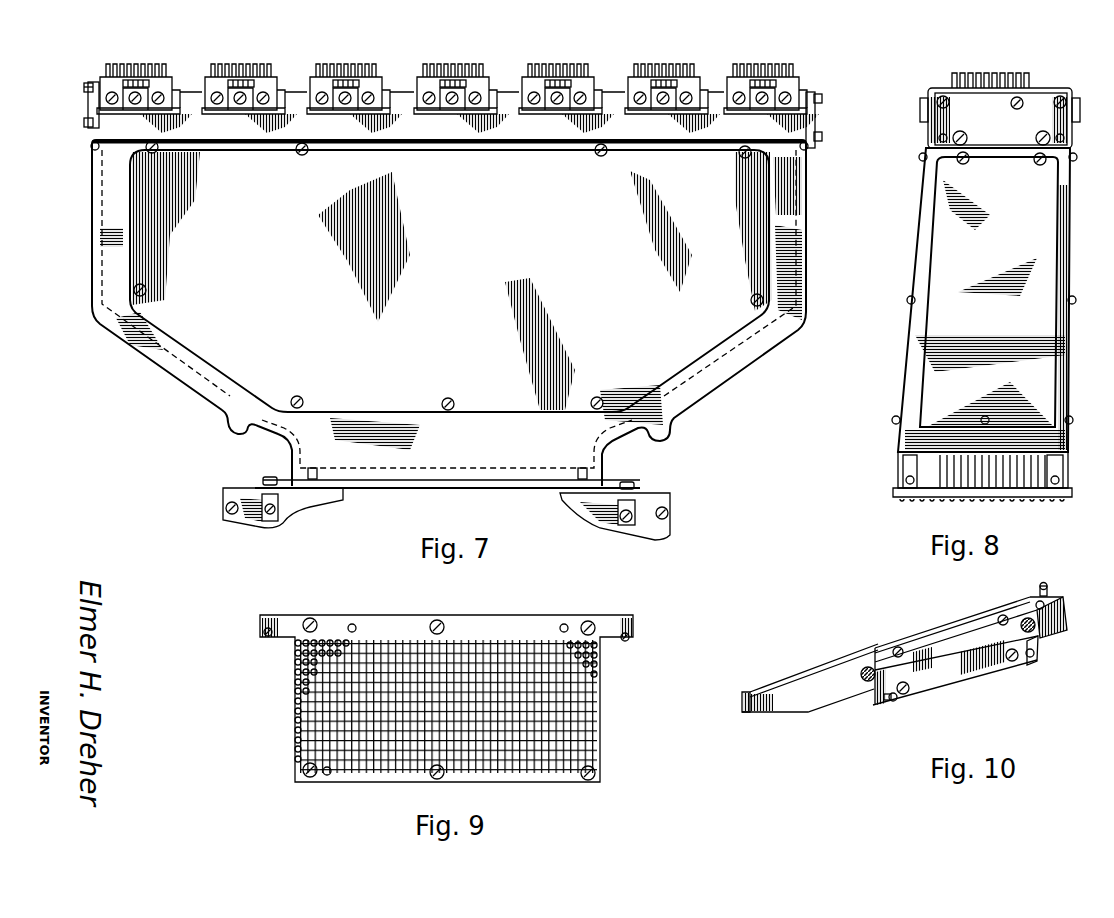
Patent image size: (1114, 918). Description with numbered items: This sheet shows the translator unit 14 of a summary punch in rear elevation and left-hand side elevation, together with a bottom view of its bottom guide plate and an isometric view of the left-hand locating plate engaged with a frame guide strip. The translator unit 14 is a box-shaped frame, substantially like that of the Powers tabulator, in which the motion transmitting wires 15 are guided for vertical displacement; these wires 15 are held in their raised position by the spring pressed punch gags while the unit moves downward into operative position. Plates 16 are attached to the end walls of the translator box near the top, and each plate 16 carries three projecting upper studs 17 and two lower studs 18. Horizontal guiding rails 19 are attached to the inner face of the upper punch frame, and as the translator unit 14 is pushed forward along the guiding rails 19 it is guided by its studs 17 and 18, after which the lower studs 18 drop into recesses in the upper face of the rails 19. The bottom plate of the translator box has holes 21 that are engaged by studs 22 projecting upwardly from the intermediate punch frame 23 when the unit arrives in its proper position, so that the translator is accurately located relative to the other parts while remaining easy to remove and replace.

In FIG. 7, the translator unit 14 is at (55, 263).
In FIG. 8, the translator unit 14 is at (912, 225).
In FIG. 7, the motion transmitting wires 15 is at (735, 66).
In FIG. 8, the motion transmitting wires 15 is at (952, 77).
In FIG. 7, the plates 16 is at (88, 100).
In FIG. 8, the plates 16 is at (935, 116).
In FIG. 10, the plates 16 is at (957, 674).
In FIG. 7, the upper studs 17 is at (84, 86).
In FIG. 8, the upper studs 17 is at (937, 100).
In FIG. 10, the upper studs 17 is at (995, 610).
In FIG. 7, the lower studs 18 is at (84, 122).
In FIG. 8, the lower studs 18 is at (939, 138).
In FIG. 10, the lower studs 18 is at (1027, 662).
In FIG. 10, the horizontal guiding rails 19 is at (832, 681).
In FIG. 9, the holes 21 is at (266, 629).
In FIG. 7, the studs 22 is at (268, 478).
In FIG. 7, the intermediate punch frame 23 is at (668, 527).